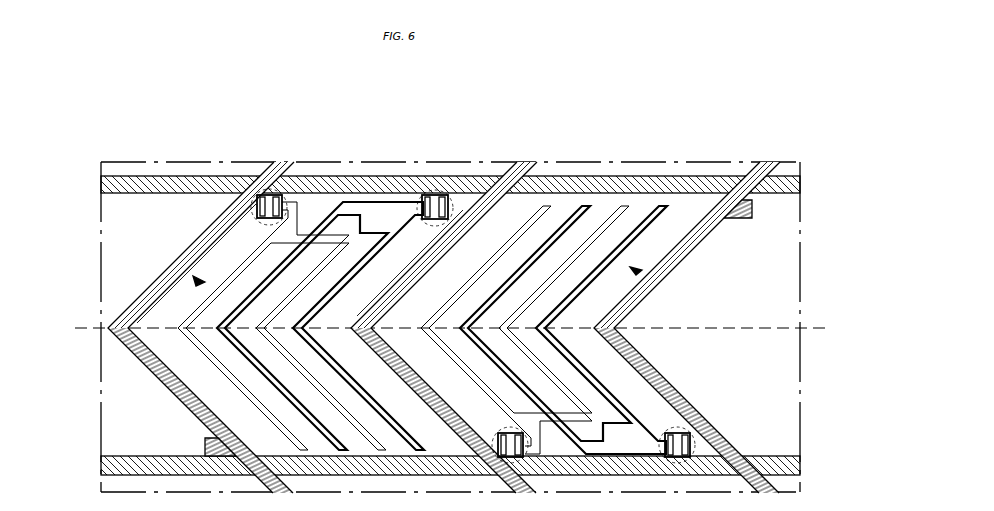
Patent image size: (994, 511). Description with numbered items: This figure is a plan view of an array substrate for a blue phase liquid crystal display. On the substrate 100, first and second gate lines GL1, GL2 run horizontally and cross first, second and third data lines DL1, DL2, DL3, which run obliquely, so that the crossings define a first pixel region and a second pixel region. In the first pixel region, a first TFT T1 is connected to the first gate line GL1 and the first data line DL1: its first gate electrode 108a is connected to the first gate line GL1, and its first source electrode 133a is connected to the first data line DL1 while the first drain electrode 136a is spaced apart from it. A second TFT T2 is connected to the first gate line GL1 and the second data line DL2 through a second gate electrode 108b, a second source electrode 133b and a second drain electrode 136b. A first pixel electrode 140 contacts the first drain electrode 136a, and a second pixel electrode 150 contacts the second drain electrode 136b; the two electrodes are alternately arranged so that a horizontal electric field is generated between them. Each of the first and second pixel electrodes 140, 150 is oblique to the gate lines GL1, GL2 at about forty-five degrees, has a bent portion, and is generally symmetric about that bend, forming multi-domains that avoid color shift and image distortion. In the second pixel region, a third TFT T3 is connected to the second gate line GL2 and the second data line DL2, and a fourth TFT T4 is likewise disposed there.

The substrate 100 is at (733, 112).
The first gate line GL1 is at (100, 184).
The second gate line GL2 is at (100, 466).
The first data line DL1 is at (281, 160).
The second data line DL2 is at (522, 160).
The third data line DL3 is at (768, 160).
The first gate electrode 108a is at (240, 224).
The second gate electrode 108b is at (446, 230).
The first source electrode 133a is at (262, 196).
The first drain electrode 136a is at (277, 196).
The second drain electrode 136b is at (426, 196).
The second source electrode 133b is at (446, 196).
The first pixel electrode 140 is at (238, 266).
The second pixel electrode 150 is at (277, 390).
The first TFT T1 is at (264, 222).
The second TFT T2 is at (432, 222).
The third TFT T3 is at (500, 432).
The fourth TFT T4 is at (690, 432).